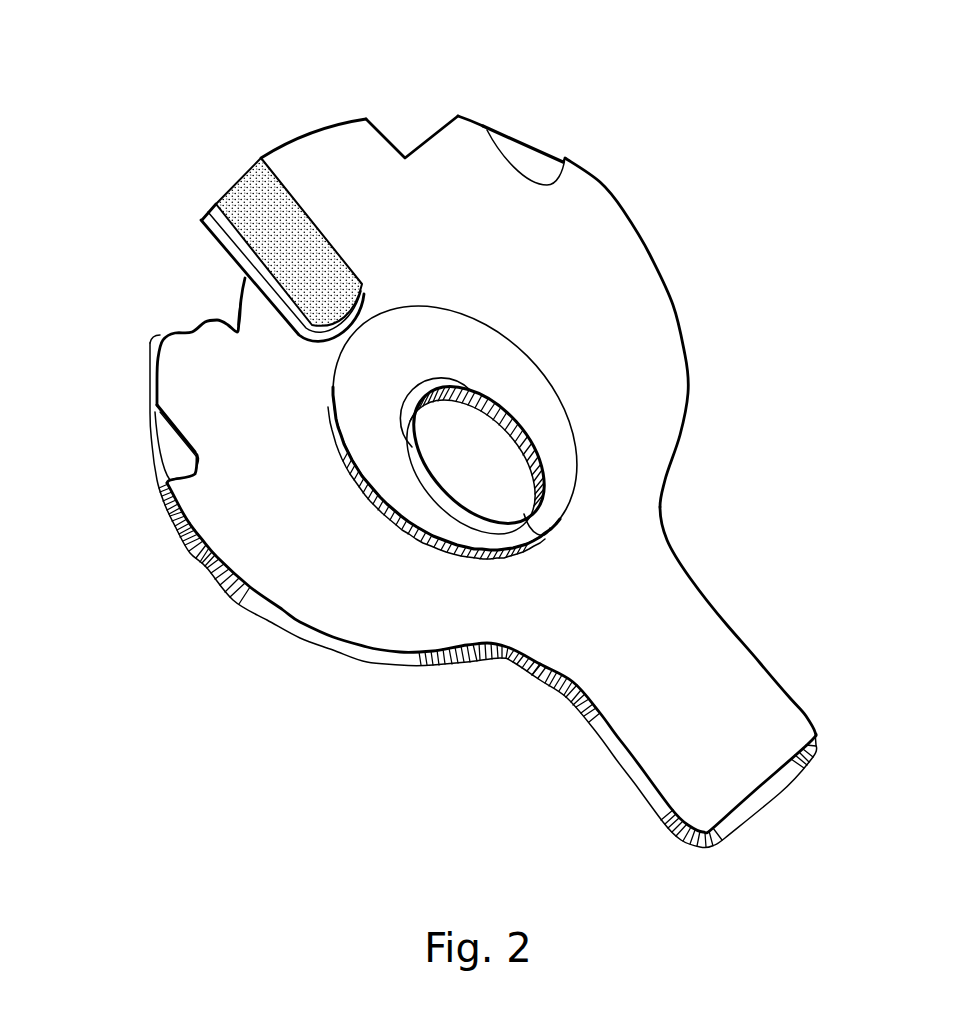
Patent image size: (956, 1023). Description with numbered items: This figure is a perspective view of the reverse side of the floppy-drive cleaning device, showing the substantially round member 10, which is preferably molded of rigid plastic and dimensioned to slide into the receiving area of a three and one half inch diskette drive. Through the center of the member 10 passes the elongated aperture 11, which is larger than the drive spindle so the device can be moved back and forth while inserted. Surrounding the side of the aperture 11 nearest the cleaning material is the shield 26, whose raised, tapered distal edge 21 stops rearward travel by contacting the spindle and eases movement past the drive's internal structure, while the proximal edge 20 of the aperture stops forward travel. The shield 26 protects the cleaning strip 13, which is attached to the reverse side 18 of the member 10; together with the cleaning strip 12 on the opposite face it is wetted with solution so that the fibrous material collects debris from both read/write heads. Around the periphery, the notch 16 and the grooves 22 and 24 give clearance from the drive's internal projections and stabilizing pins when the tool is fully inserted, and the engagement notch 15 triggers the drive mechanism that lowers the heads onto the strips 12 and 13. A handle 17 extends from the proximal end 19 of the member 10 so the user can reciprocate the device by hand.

The round member 10 is at (607, 237).
The elongated aperture 11 is at (452, 457).
The cleaning strip 12 is at (212, 248).
The cleaning strip 13 is at (232, 203).
The engagement notch 15 is at (198, 325).
The notch 16 is at (383, 134).
The handle 17 is at (713, 667).
The reverse side 18 is at (648, 338).
The proximal end 19 is at (445, 659).
The proximal edge 20 is at (537, 535).
The raised distal edge 21 is at (425, 387).
The groove 22 is at (177, 448).
The groove 24 is at (527, 146).
The shield 26 is at (356, 397).